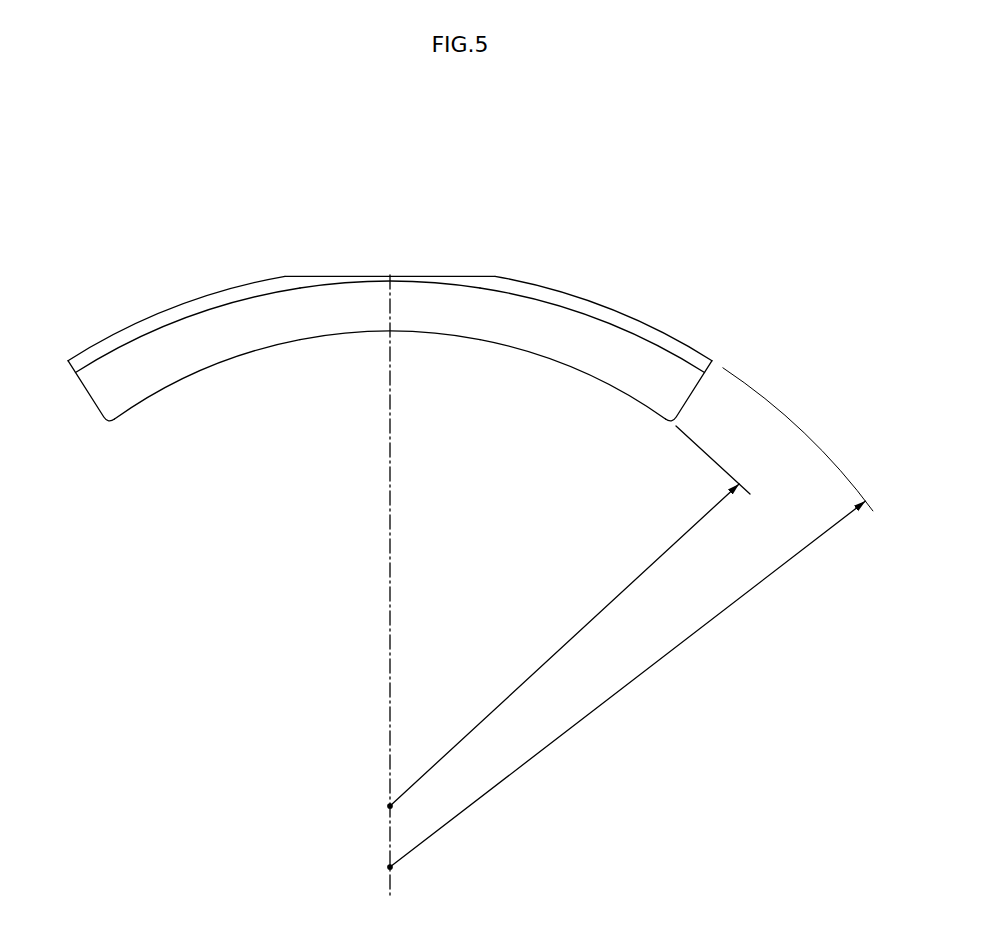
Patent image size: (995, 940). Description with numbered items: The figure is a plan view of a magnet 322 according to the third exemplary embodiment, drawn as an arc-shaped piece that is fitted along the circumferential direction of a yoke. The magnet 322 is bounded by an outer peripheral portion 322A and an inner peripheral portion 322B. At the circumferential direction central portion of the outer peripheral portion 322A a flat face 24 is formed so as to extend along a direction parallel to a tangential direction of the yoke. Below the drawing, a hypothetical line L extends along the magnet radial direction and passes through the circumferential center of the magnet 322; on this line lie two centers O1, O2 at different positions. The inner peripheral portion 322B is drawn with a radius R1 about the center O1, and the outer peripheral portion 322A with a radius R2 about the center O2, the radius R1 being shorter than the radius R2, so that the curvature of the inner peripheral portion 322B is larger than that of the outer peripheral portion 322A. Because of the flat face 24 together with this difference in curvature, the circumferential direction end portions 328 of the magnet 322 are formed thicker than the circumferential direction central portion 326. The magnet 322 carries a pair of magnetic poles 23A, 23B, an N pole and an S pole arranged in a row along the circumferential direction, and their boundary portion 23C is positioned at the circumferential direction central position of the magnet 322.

The magnet 322 is at (390, 297).
The outer peripheral portion 322A is at (563, 289).
The inner peripheral portion 322B is at (538, 354).
The flat face 24 is at (357, 274).
The magnetic pole 23A is at (222, 318).
The magnetic pole 23B is at (573, 322).
The boundary portion 23C is at (393, 294).
The circumferential direction central portion 326 is at (370, 318).
The circumferential direction end portion 328 is at (128, 392).
The hypothetical line L is at (393, 548).
The radius of inner peripheral portion R1 is at (579, 631).
The radius of outer peripheral portion R2 is at (636, 678).
The center of inner peripheral radius O1 is at (388, 806).
The center of outer peripheral radius O2 is at (388, 867).